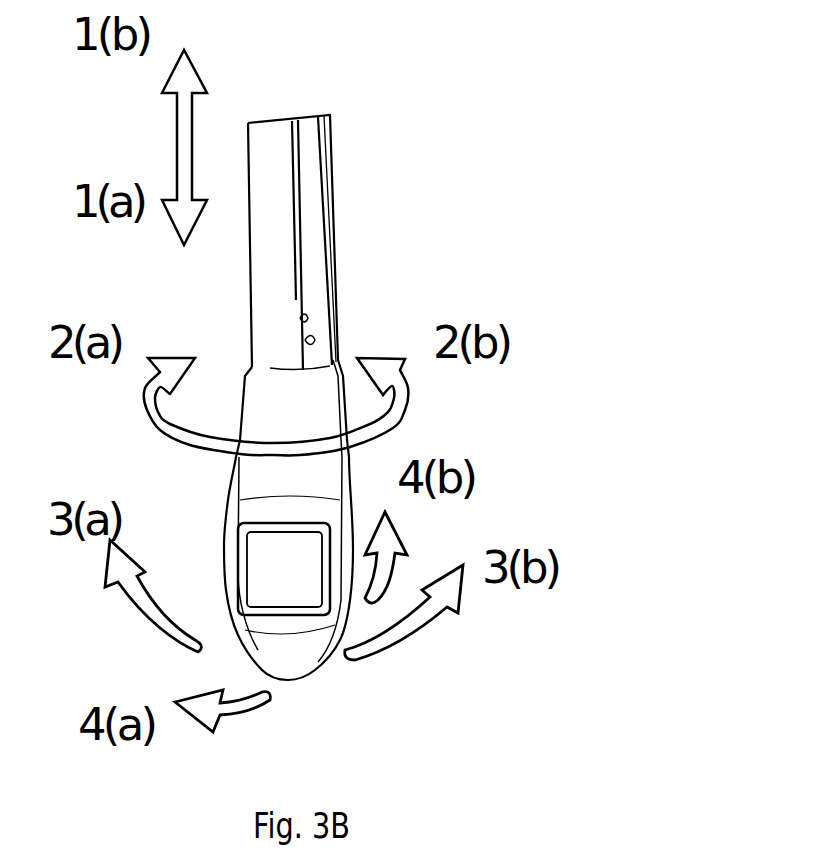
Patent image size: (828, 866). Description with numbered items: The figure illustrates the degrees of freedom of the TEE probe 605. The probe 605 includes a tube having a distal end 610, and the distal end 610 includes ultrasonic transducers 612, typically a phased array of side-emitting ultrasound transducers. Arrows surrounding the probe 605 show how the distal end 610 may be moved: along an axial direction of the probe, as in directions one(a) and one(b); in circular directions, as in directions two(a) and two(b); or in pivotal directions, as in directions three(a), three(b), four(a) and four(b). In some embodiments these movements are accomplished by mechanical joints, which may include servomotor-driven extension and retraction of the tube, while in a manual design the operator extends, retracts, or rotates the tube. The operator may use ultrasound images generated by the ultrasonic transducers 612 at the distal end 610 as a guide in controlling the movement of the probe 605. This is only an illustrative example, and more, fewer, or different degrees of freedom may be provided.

The probe 605 is at (622, 283).
The distal end 610 is at (530, 440).
The ultrasonic transducers 612 is at (277, 567).